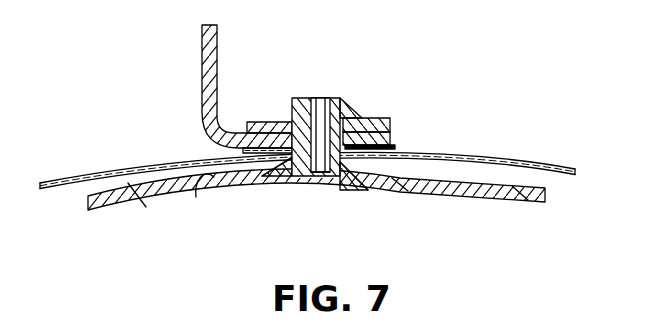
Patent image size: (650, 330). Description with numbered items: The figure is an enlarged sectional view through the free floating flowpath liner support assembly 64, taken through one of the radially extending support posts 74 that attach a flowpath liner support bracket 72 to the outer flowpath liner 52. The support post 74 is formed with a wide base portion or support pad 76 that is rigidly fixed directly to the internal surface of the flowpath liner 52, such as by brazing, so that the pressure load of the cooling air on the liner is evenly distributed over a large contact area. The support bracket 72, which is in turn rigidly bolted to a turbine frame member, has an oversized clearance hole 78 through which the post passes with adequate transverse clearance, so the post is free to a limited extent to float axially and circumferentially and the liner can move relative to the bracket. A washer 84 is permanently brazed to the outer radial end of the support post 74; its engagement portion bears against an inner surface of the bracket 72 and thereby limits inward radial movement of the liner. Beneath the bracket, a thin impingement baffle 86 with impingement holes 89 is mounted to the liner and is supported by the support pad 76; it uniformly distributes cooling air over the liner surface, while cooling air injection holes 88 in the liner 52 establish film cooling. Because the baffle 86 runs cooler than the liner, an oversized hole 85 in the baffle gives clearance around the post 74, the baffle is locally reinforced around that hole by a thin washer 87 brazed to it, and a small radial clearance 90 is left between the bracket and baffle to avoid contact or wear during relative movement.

The outer flowpath liner 52 is at (450, 196).
The fastener assembly 64 is at (372, 82).
The flowpath liner support bracket 72 is at (211, 59).
The support post 74 is at (292, 98).
The support pad 76 is at (196, 197).
The oversized clearance hole 78 is at (392, 119).
The washer 84 is at (363, 117).
The oversized hole 85 is at (395, 148).
The impingement baffle 86 is at (138, 168).
The thin washer 87 is at (347, 188).
The cooling air injection hole 88 is at (278, 190).
The impingement hole 89 is at (88, 177).
The radial clearance 90 is at (252, 150).